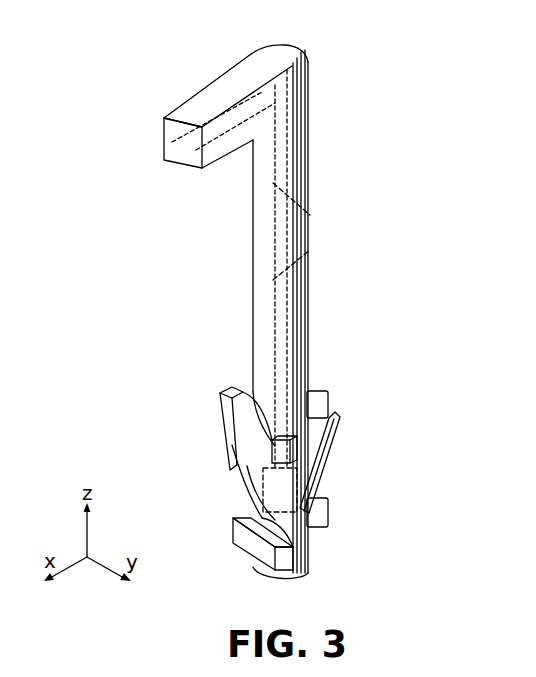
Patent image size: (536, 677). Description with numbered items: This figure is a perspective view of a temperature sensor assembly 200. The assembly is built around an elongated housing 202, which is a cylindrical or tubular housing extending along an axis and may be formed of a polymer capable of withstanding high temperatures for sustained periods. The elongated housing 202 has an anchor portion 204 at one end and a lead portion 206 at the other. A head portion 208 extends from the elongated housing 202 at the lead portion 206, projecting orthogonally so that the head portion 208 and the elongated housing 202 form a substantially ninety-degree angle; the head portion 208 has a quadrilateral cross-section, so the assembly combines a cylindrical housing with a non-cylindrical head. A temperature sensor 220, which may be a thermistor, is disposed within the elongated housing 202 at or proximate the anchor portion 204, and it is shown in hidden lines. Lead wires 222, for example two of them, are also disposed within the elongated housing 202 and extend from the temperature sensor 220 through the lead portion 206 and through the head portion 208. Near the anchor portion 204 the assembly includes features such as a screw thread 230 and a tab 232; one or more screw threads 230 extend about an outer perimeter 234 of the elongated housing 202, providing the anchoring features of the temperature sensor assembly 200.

The temperature sensor assembly 200 is at (178, 56).
The elongated housing 202 is at (198, 242).
The anchor portion 204 is at (258, 468).
The lead portion 206 is at (309, 165).
The head portion 208 is at (177, 105).
The temperature sensor 220 is at (313, 535).
The lead wires 222 is at (313, 215).
The screw thread 230 is at (272, 445).
The tab 232 is at (230, 387).
The outer perimeter 234 is at (309, 375).